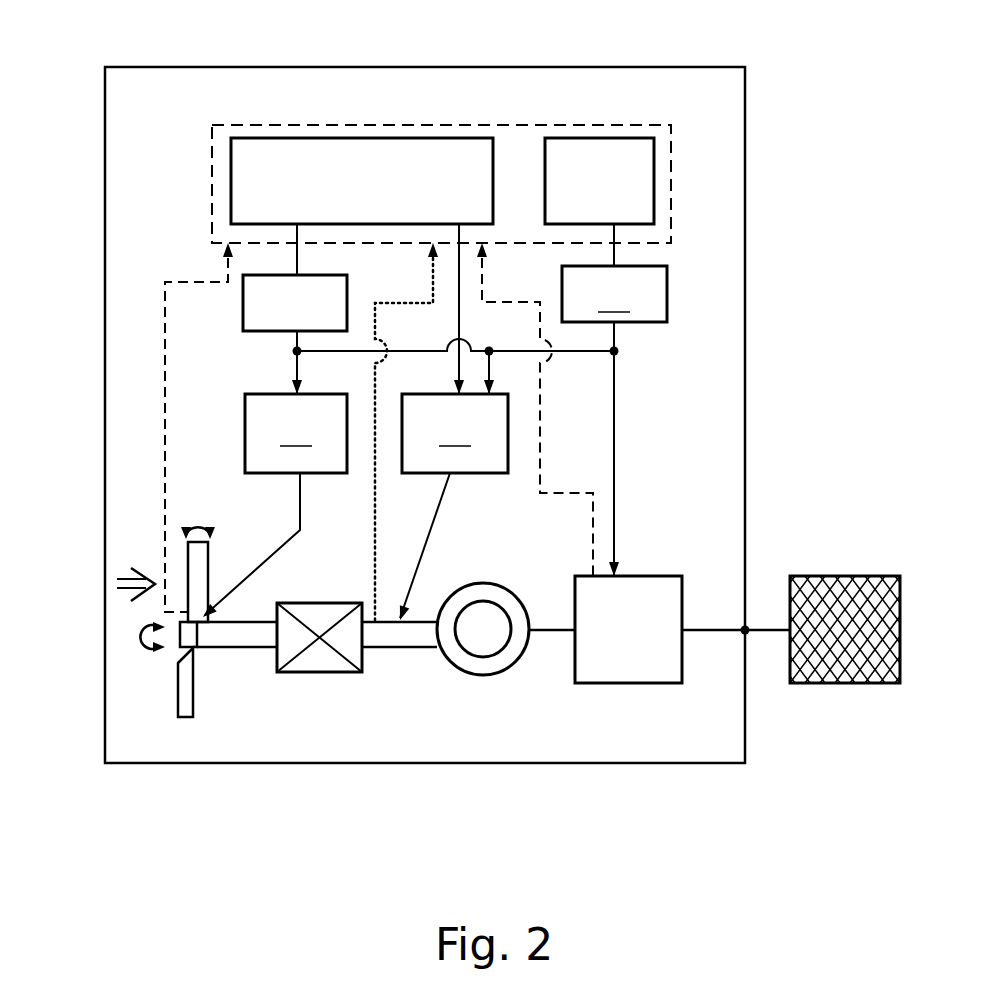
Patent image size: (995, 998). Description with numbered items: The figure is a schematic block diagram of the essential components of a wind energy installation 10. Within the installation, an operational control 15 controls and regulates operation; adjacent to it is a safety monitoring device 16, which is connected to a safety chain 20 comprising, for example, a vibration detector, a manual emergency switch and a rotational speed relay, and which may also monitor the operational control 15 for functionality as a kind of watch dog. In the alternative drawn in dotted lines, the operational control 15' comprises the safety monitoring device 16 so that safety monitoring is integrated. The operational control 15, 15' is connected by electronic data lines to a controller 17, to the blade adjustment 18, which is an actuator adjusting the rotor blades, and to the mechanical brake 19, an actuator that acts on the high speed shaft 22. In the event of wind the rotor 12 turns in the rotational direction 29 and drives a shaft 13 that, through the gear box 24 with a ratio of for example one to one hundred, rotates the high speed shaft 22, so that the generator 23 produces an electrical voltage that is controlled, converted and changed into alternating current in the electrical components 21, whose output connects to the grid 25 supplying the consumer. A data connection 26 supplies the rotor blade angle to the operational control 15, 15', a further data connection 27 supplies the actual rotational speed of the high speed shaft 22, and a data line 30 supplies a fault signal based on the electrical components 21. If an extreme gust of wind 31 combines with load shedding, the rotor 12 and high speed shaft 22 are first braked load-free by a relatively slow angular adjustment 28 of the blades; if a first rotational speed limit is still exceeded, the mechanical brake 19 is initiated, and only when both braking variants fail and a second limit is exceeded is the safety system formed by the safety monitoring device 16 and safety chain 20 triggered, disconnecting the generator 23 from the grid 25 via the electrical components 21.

The wind energy installation 10 is at (705, 130).
The rotor 12 is at (165, 707).
The rotor shaft 13 is at (222, 637).
The operational control 15 is at (363, 114).
The operational control 15' is at (441, 123).
The safety monitoring device 16 is at (588, 145).
The controller 17 is at (243, 313).
The blade adjustment 18 is at (296, 433).
The mechanical brake 19 is at (455, 433).
The safety chain 20 is at (614, 294).
The electrical components 21 is at (640, 670).
The high speed shaft 22 is at (390, 638).
The generator 23 is at (497, 665).
The gear box 24 is at (313, 662).
The grid 25 is at (835, 610).
The data connection 26 is at (163, 432).
The data connection 27 is at (376, 530).
The angular adjustment 28 is at (195, 512).
The rotational direction 29 is at (143, 640).
The data line 30 is at (595, 530).
The gust of wind 31 is at (117, 580).